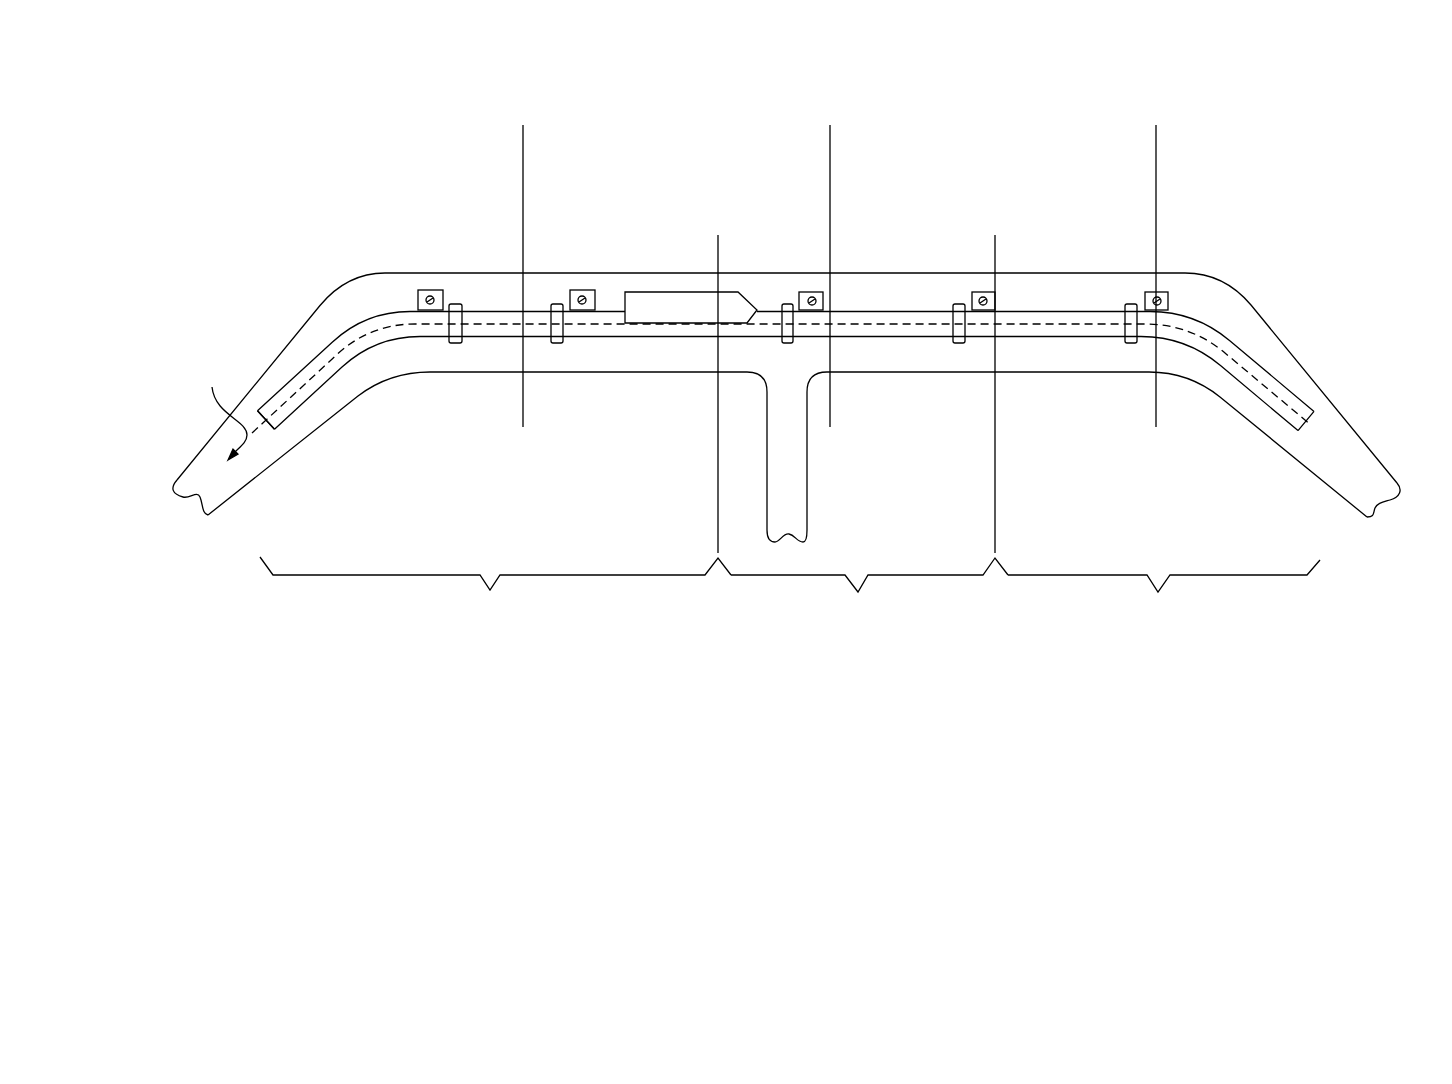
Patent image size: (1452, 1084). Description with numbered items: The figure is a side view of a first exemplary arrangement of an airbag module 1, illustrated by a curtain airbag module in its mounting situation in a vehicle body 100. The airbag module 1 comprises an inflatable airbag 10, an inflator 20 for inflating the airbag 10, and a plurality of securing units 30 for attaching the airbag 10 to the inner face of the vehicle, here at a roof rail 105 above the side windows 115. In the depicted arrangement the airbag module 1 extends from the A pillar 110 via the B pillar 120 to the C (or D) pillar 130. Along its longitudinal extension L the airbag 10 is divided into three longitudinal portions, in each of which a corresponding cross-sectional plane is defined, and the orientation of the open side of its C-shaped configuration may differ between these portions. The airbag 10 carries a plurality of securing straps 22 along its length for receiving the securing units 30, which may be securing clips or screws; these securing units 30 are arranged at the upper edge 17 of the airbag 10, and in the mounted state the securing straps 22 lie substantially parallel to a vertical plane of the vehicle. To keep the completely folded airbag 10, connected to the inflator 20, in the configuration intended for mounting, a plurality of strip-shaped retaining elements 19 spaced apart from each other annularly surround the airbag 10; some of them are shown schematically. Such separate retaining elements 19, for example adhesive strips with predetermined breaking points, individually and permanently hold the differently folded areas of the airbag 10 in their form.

The airbag module 1 is at (843, 263).
The airbag 10 is at (303, 363).
The upper edge 17 is at (1027, 310).
The retaining elements 19 is at (1130, 305).
The inflator 20 is at (677, 292).
The securing straps 22 is at (1162, 293).
The securing units 30 is at (1165, 298).
The vehicle body 100 is at (1260, 317).
The roof rail 105 is at (1070, 272).
The A pillar 110 is at (207, 443).
The side windows 115 is at (639, 514).
The B pillar 120 is at (808, 497).
The C pillar 130 is at (1353, 420).